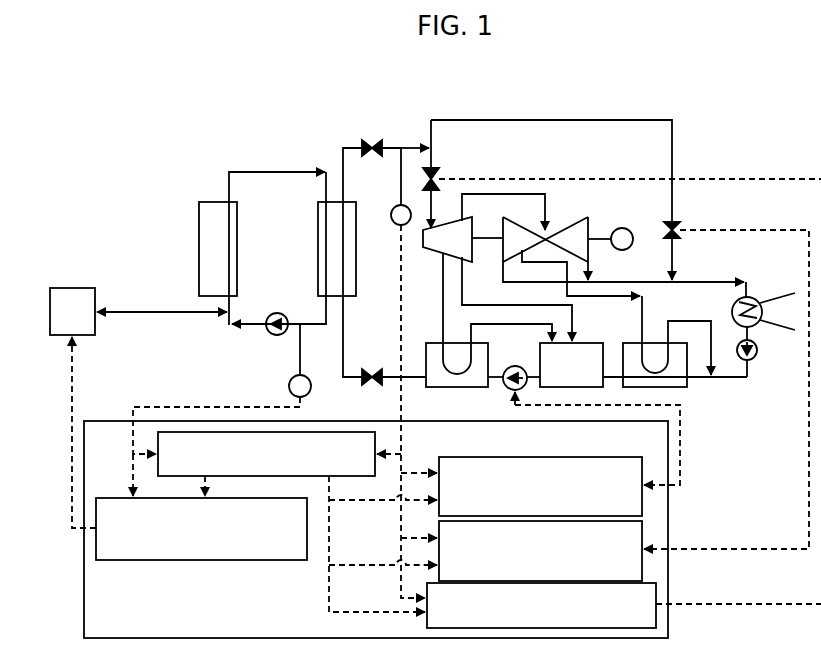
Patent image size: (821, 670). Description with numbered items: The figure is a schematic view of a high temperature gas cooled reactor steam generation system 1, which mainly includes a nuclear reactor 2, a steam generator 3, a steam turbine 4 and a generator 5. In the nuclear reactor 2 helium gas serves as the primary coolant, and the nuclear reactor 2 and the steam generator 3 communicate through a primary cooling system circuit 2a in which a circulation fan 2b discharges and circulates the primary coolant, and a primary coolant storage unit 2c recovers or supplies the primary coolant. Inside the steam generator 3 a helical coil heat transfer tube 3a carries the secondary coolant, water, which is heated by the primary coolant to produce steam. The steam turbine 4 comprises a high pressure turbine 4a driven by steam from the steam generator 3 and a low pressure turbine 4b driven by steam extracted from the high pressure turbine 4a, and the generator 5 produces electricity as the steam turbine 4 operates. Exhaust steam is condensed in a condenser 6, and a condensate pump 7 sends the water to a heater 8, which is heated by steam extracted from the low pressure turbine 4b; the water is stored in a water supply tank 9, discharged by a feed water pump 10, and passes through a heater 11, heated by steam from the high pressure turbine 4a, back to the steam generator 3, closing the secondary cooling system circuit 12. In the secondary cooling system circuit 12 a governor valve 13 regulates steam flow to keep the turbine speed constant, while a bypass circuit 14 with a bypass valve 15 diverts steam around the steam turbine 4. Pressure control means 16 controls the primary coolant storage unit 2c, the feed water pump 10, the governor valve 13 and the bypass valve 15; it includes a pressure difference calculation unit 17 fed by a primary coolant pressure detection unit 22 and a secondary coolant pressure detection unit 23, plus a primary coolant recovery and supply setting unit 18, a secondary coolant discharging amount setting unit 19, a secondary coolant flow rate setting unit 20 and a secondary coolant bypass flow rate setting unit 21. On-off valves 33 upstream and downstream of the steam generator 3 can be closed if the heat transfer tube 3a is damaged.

The high temperature gas cooled reactor steam generation system 1 is at (729, 104).
The nuclear reactor 2 is at (198, 227).
The primary cooling system circuit 2a is at (229, 172).
The circulation fan 2b is at (278, 336).
The primary coolant storage unit 2c is at (49, 305).
The steam generator 3 is at (316, 247).
The heat transfer tube 3a is at (344, 262).
The steam turbine 4 is at (546, 228).
The high pressure turbine 4a is at (430, 247).
The low pressure turbine 4b is at (582, 217).
The generator 5 is at (631, 228).
The condenser 6 is at (762, 300).
The condensate pump 7 is at (758, 350).
The heater 8 is at (686, 383).
The water supply tank 9 is at (603, 383).
The feed water pump 10 is at (515, 366).
The heater 11 is at (457, 385).
The secondary cooling system circuit 12 is at (343, 148).
The governor valve 13 is at (440, 174).
The bypass circuit 14 is at (609, 120).
The bypass valve 15 is at (682, 228).
The pressure control means 16 is at (668, 505).
The pressure difference calculation unit 17 is at (370, 477).
The primary coolant recovery and supply setting unit 18 is at (200, 562).
The secondary coolant discharging amount setting unit 19 is at (633, 457).
The secondary coolant flow rate setting unit 20 is at (656, 596).
The secondary coolant bypass flow rate setting unit 21 is at (642, 548).
The primary coolant pressure detection unit 22 is at (289, 386).
The secondary coolant pressure detection unit 23 is at (398, 206).
The on-off valves 33 is at (372, 141).